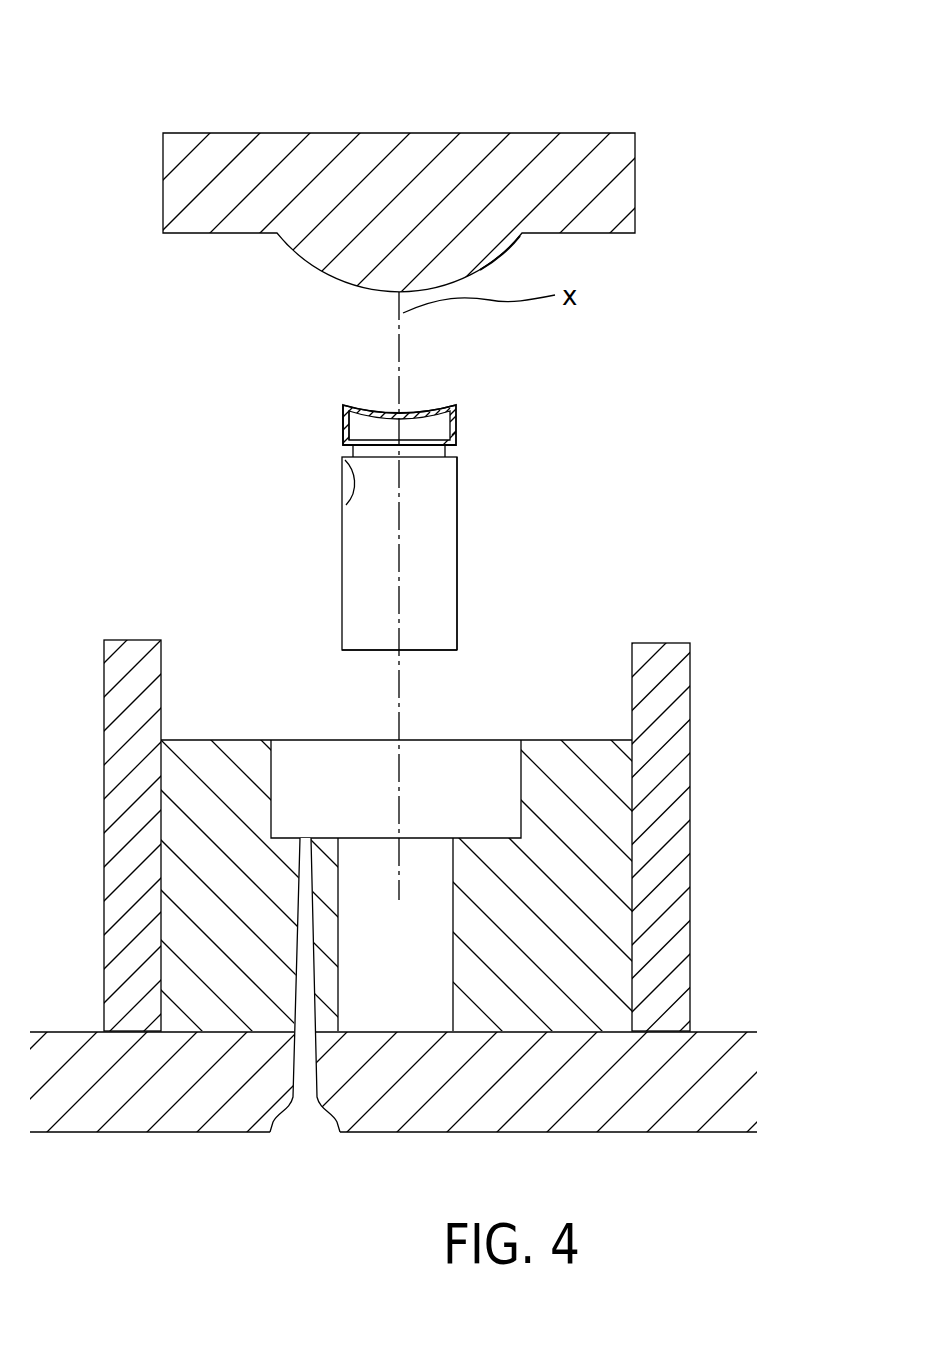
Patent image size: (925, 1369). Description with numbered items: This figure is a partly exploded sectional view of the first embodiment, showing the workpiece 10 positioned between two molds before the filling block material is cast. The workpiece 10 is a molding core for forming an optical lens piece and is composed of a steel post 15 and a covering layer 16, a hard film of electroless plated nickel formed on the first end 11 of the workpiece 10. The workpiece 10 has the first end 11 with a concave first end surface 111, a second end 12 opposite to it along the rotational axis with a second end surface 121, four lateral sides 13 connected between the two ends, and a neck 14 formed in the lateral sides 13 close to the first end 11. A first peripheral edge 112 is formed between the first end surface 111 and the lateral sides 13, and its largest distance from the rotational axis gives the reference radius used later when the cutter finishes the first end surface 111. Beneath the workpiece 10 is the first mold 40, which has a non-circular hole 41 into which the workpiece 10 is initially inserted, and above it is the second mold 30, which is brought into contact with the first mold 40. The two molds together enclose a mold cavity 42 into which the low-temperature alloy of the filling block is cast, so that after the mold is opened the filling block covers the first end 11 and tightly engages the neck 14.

The second mold 30 is at (532, 122).
The workpiece 10 is at (669, 493).
The first end 11 is at (457, 408).
The first end surface 111 is at (417, 412).
The first peripheral edge 112 is at (343, 405).
The covering layer 16 is at (343, 425).
The lateral sides 13 is at (340, 440).
The neck 14 is at (345, 460).
The post 15 is at (428, 532).
The second end 12 is at (453, 637).
The second end surface 121 is at (420, 650).
The first mold 40 is at (435, 726).
The mold cavity 42 is at (320, 773).
The non-circular hole 41 is at (375, 980).